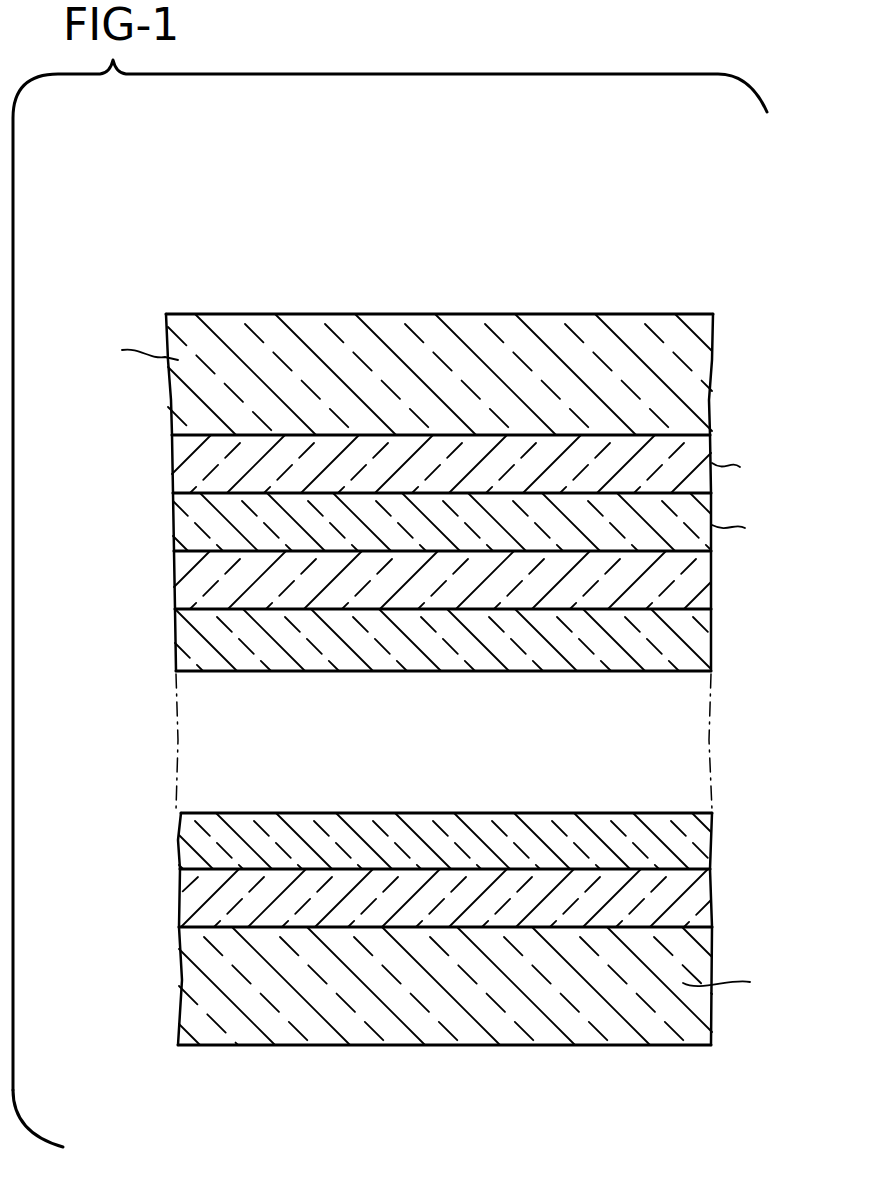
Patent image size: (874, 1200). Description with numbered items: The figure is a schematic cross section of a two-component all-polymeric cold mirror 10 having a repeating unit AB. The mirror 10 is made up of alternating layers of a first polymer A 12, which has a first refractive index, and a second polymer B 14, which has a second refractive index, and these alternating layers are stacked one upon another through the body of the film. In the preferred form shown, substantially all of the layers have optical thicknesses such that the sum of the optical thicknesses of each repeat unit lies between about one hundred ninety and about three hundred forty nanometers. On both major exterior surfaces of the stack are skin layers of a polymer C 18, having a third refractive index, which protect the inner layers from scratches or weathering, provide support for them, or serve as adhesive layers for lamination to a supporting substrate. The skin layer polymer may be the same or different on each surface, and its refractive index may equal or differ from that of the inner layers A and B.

The two-component all-polymeric cold mirror 10 is at (576, 233).
The first polymer (A) layer 12 is at (172, 452).
The second polymer (B) layer 14 is at (174, 527).
The skin layer of polymer (C) 18 is at (697, 404).